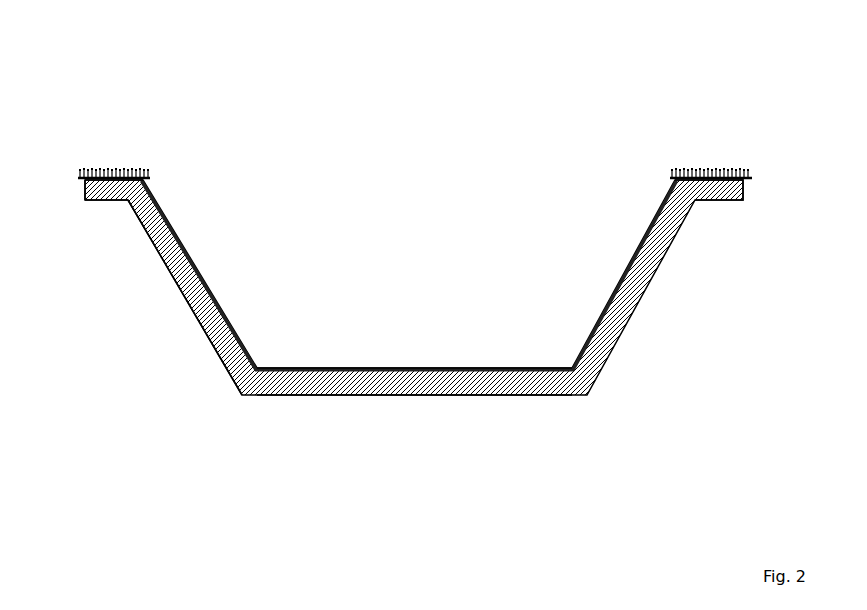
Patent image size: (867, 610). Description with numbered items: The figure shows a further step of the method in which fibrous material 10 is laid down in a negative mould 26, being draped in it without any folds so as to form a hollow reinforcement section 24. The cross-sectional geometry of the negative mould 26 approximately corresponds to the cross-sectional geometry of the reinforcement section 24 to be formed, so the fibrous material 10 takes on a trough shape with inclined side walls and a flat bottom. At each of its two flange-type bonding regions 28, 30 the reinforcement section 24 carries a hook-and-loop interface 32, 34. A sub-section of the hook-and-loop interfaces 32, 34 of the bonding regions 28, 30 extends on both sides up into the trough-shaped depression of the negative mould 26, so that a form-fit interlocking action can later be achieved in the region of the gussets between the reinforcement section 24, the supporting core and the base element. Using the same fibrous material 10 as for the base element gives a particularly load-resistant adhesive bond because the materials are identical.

The fibrous material 10 is at (213, 285).
The reinforcement section 24 is at (390, 370).
The negative mould 26 is at (175, 278).
The bonding region 28 is at (152, 158).
The bonding region 30 is at (672, 158).
The hook-and-loop interface 32 is at (98, 168).
The hook-and-loop interface 34 is at (725, 170).